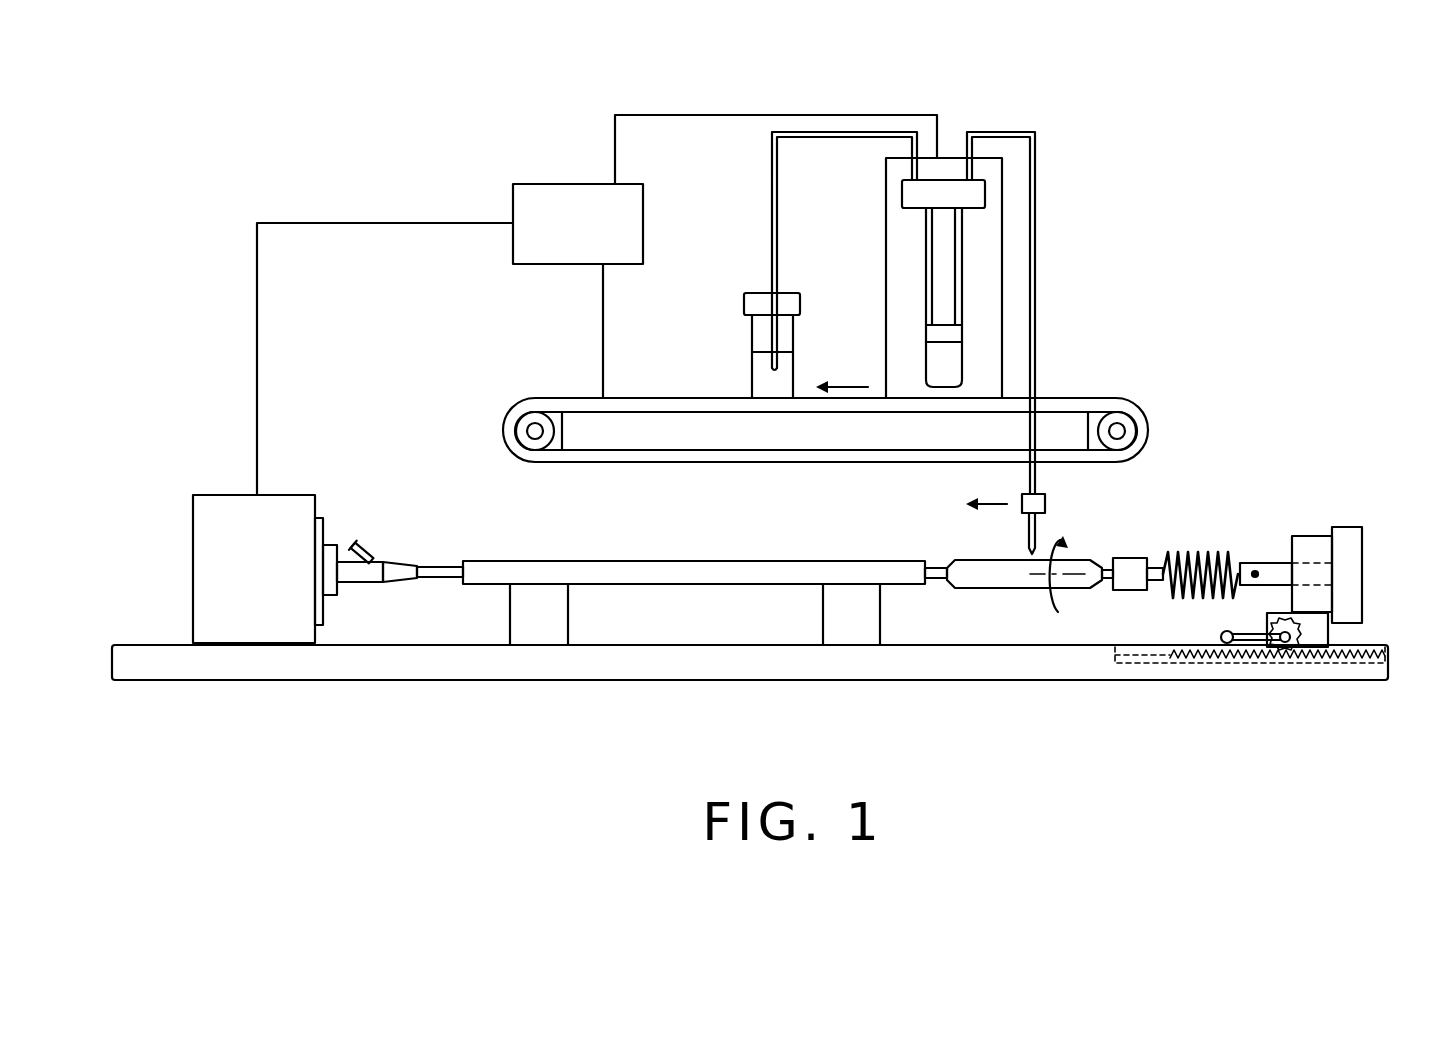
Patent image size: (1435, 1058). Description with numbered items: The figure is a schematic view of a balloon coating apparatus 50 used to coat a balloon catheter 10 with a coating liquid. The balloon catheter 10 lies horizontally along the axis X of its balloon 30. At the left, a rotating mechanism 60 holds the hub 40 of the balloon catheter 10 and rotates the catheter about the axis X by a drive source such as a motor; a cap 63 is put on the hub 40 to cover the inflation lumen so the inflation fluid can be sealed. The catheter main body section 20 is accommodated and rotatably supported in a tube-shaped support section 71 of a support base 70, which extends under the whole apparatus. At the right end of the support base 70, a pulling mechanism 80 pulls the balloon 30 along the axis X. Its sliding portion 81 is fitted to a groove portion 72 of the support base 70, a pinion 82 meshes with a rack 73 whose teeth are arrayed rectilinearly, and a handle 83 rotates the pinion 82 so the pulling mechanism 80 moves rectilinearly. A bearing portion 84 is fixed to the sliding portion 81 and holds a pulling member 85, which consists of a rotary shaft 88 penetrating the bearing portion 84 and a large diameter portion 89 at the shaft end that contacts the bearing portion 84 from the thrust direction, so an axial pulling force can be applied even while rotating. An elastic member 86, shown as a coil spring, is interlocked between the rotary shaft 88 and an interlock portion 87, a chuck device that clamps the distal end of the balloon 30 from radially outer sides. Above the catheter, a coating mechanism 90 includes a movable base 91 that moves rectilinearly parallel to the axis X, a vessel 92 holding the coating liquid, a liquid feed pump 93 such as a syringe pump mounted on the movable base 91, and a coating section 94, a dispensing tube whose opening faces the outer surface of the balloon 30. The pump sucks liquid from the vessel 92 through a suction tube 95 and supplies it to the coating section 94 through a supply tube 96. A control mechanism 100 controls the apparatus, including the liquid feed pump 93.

The balloon coating apparatus 50 is at (260, 161).
The control mechanism 100 is at (567, 180).
The suction tube 95 is at (772, 193).
The supply tube 96 is at (1035, 193).
The liquid feed pump 93 is at (926, 255).
The vessel 92 is at (755, 336).
The coating mechanism 90 is at (1063, 353).
The movable base 91 is at (1093, 407).
The coating section 94 is at (1027, 528).
The rotating mechanism 60 is at (203, 500).
The cap 63 is at (353, 545).
The balloon catheter 10 is at (445, 550).
The hub 40 is at (366, 570).
The tube-shaped support section 71 is at (535, 573).
The balloon 30 is at (960, 578).
The catheter main body section 20 is at (925, 566).
The axis X is at (1085, 574).
The interlock portion 87 is at (1125, 560).
The elastic member 86 is at (1205, 552).
The pulling member 85 is at (1272, 411).
The rotary shaft 88 is at (1280, 565).
The bearing portion 84 is at (1320, 540).
The large diameter portion 89 is at (1348, 537).
The pulling mechanism 80 is at (1379, 520).
The sliding portion 81 is at (1318, 648).
The pinion 82 is at (1284, 652).
The handle 83 is at (1228, 644).
The support base 70 is at (452, 683).
The rack 73 is at (1380, 657).
The groove portion 72 is at (1370, 648).